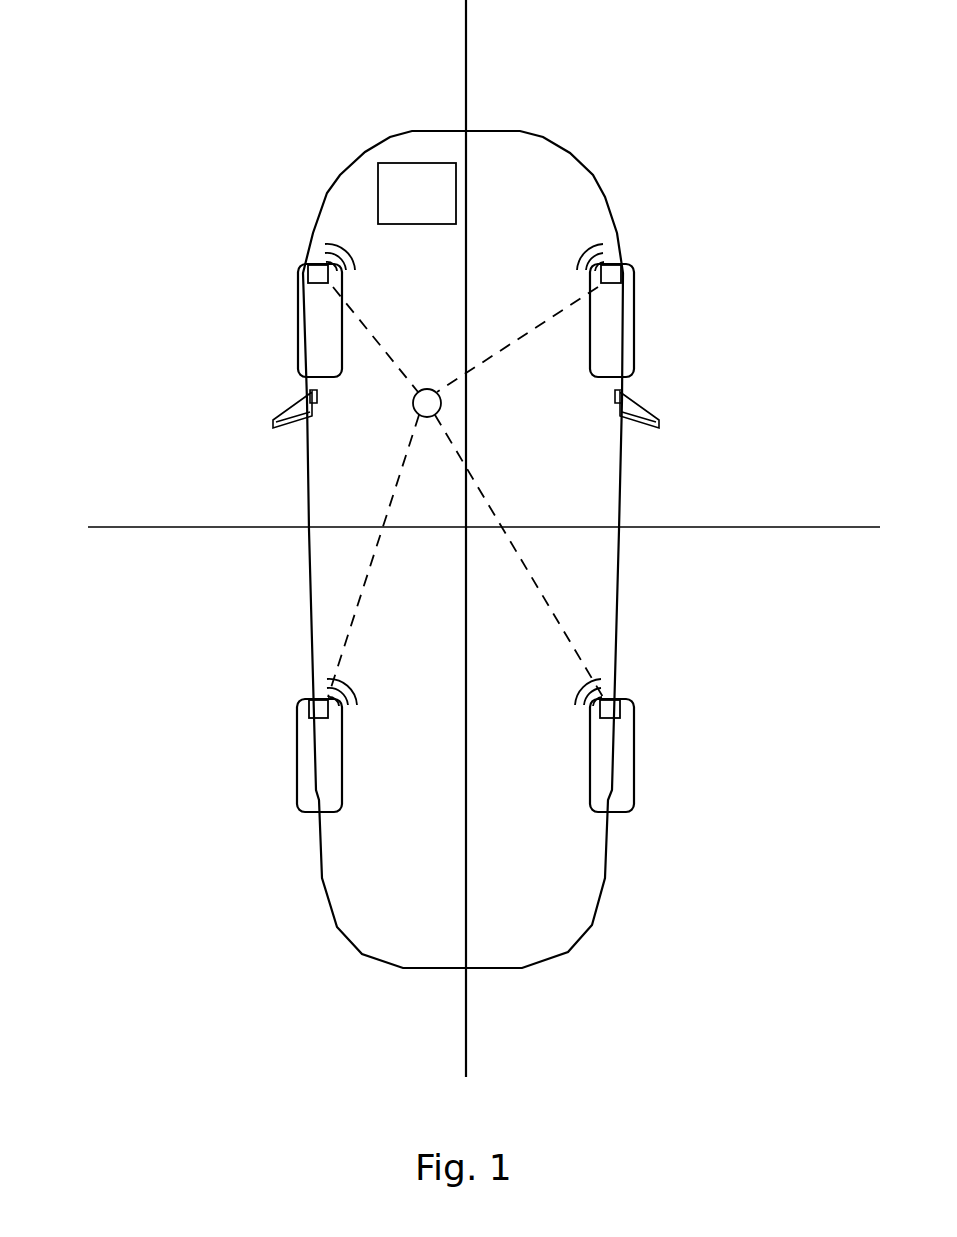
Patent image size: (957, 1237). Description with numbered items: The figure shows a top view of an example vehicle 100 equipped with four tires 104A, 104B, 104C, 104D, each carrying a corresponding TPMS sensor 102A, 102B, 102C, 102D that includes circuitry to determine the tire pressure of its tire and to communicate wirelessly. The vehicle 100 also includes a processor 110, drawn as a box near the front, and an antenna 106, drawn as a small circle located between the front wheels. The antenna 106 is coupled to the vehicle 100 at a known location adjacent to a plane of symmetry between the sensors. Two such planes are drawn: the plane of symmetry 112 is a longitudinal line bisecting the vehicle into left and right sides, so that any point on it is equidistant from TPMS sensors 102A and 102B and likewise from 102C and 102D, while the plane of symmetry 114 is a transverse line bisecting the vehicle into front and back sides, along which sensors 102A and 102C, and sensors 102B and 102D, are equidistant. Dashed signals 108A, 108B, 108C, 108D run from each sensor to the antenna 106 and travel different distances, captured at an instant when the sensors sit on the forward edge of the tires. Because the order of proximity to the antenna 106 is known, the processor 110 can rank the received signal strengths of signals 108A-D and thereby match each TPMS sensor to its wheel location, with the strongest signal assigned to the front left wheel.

The vehicle 100 is at (462, 130).
The TPMS sensor 102A is at (300, 268).
The TPMS sensor 102B is at (632, 268).
The TPMS sensor 102C is at (302, 712).
The TPMS sensor 102D is at (625, 712).
The tire 104A is at (298, 360).
The tire 104B is at (636, 358).
The tire 104C is at (297, 780).
The tire 104D is at (635, 778).
The antenna 106 is at (413, 410).
The signal 108A is at (400, 374).
The signal 108B is at (500, 353).
The signal 108C is at (368, 567).
The signal 108D is at (552, 607).
The processor 110 is at (417, 193).
The plane of symmetry 112 is at (467, 1063).
The plane of symmetry 114 is at (866, 527).